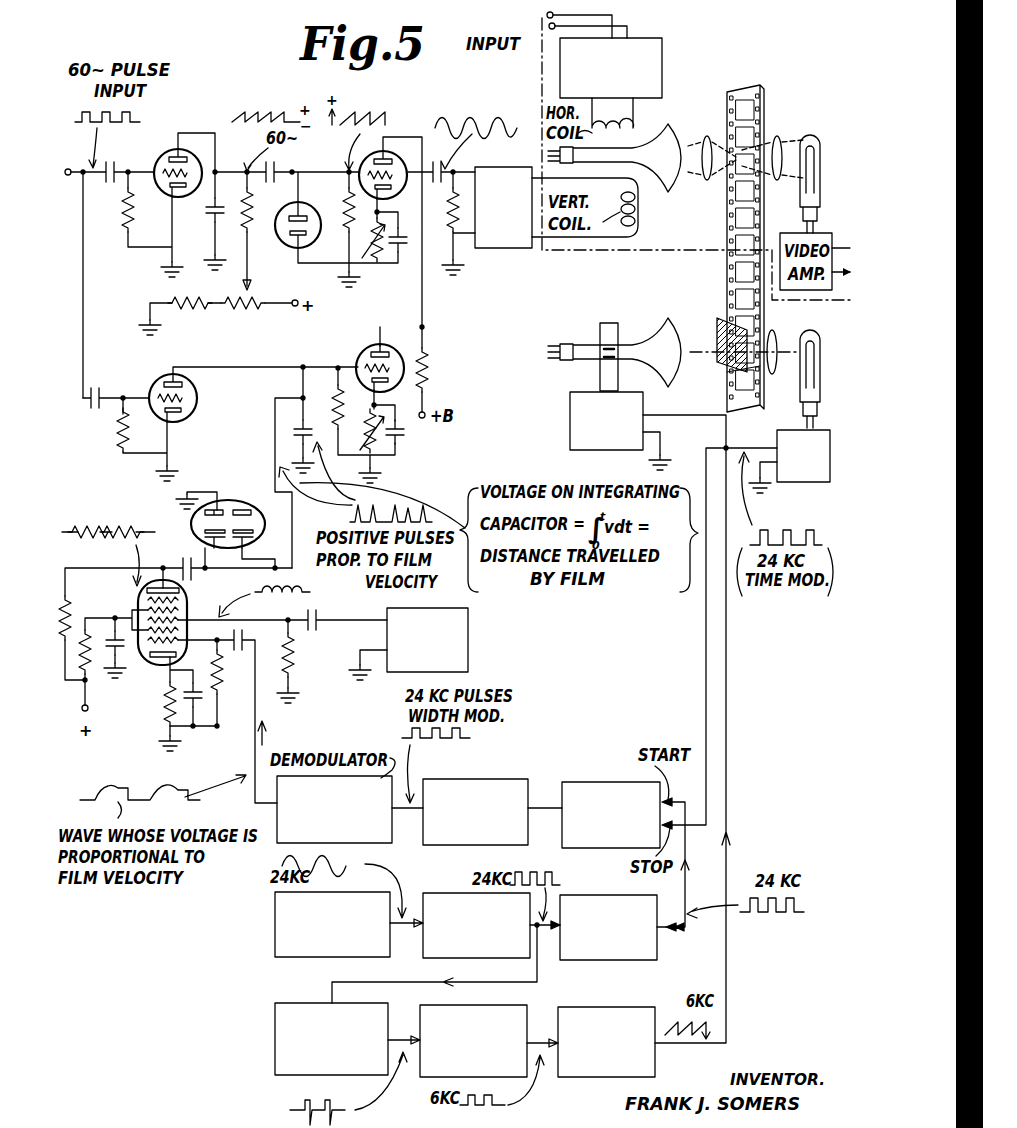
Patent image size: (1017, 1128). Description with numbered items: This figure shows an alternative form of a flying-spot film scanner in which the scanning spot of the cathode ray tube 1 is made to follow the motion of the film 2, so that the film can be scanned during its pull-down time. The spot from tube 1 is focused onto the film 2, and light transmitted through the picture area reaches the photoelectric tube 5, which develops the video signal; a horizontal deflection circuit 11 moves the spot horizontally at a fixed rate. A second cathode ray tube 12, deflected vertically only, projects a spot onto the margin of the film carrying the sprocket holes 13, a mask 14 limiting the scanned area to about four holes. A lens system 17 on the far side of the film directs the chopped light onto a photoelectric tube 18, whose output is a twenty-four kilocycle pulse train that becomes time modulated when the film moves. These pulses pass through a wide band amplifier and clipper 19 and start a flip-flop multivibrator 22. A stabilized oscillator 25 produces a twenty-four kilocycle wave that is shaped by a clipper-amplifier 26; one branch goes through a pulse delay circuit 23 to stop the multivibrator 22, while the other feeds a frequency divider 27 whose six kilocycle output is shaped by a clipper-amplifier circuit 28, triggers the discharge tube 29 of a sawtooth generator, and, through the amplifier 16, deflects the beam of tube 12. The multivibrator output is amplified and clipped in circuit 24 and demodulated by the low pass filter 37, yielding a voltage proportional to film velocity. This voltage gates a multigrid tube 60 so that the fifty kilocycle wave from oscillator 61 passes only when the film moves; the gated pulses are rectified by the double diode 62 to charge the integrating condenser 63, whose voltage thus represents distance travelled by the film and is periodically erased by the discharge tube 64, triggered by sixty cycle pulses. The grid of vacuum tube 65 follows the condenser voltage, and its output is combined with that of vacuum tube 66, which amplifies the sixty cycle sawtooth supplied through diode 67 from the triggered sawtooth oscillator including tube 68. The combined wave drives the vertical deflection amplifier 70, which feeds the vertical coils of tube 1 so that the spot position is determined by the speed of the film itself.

The cathode ray tube 1 is at (672, 132).
The film 2 is at (742, 107).
The photoelectric tube 5 is at (821, 150).
The horizontal deflection circuit 11 is at (662, 50).
The second cathode ray tube 12 is at (666, 320).
The sprocket holes 13 is at (750, 374).
The mask 14 is at (717, 322).
The amplifier 16 is at (570, 405).
The lens system 17 is at (775, 337).
The photoelectric tube 18 is at (820, 340).
The wide band amplifier and clipper 19 is at (822, 482).
The flip-flop multivibrator 22 is at (598, 782).
The pulse delay circuit 23 is at (614, 895).
The amplifying and clipping circuit 24 is at (508, 781).
The stabilized oscillator 25 is at (275, 946).
The clipper-amplifier 26 is at (460, 893).
The frequency divider 27 is at (275, 1056).
The clipper-amplifier circuit 28 is at (527, 1005).
The discharge tube of sawtooth wave generator 29 is at (610, 1007).
The demodulator 37 is at (392, 843).
The multigrid tube 60 is at (137, 602).
The 50 kc oscillator 61 is at (468, 633).
The double diode 62 is at (232, 500).
The integrating condenser 63 is at (293, 431).
The discharge tube 64 is at (160, 372).
The vacuum tube 65 is at (372, 352).
The vacuum tube 66 is at (392, 155).
The diode 67 is at (290, 255).
The tube of triggered sawtooth oscillator 68 is at (174, 149).
The vertical deflection amplifier 70 is at (505, 249).